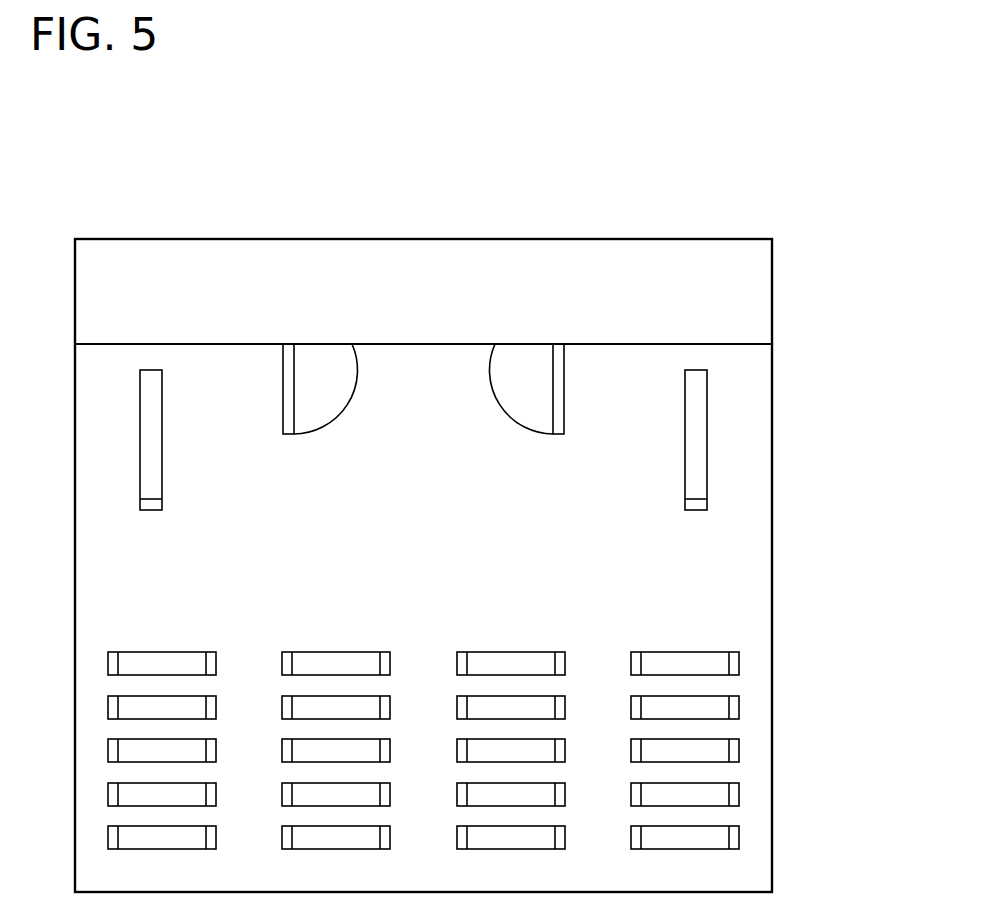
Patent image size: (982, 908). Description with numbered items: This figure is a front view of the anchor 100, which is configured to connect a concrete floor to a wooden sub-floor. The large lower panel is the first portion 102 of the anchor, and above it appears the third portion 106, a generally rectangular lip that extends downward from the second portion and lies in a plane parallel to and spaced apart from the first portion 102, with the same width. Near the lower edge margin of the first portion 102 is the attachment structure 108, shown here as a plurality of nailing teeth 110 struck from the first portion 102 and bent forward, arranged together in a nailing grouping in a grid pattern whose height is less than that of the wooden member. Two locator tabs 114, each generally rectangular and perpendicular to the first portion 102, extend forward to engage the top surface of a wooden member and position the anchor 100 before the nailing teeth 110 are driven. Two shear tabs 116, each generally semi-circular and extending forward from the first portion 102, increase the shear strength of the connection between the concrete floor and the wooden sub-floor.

The anchor 100 is at (837, 252).
The first portion 102 is at (443, 514).
The third portion 106 is at (443, 303).
The attachment structure 108 is at (407, 639).
The nailing teeth 110 is at (564, 665).
The locator tab 114 is at (162, 508).
The shear tab 116 is at (283, 390).